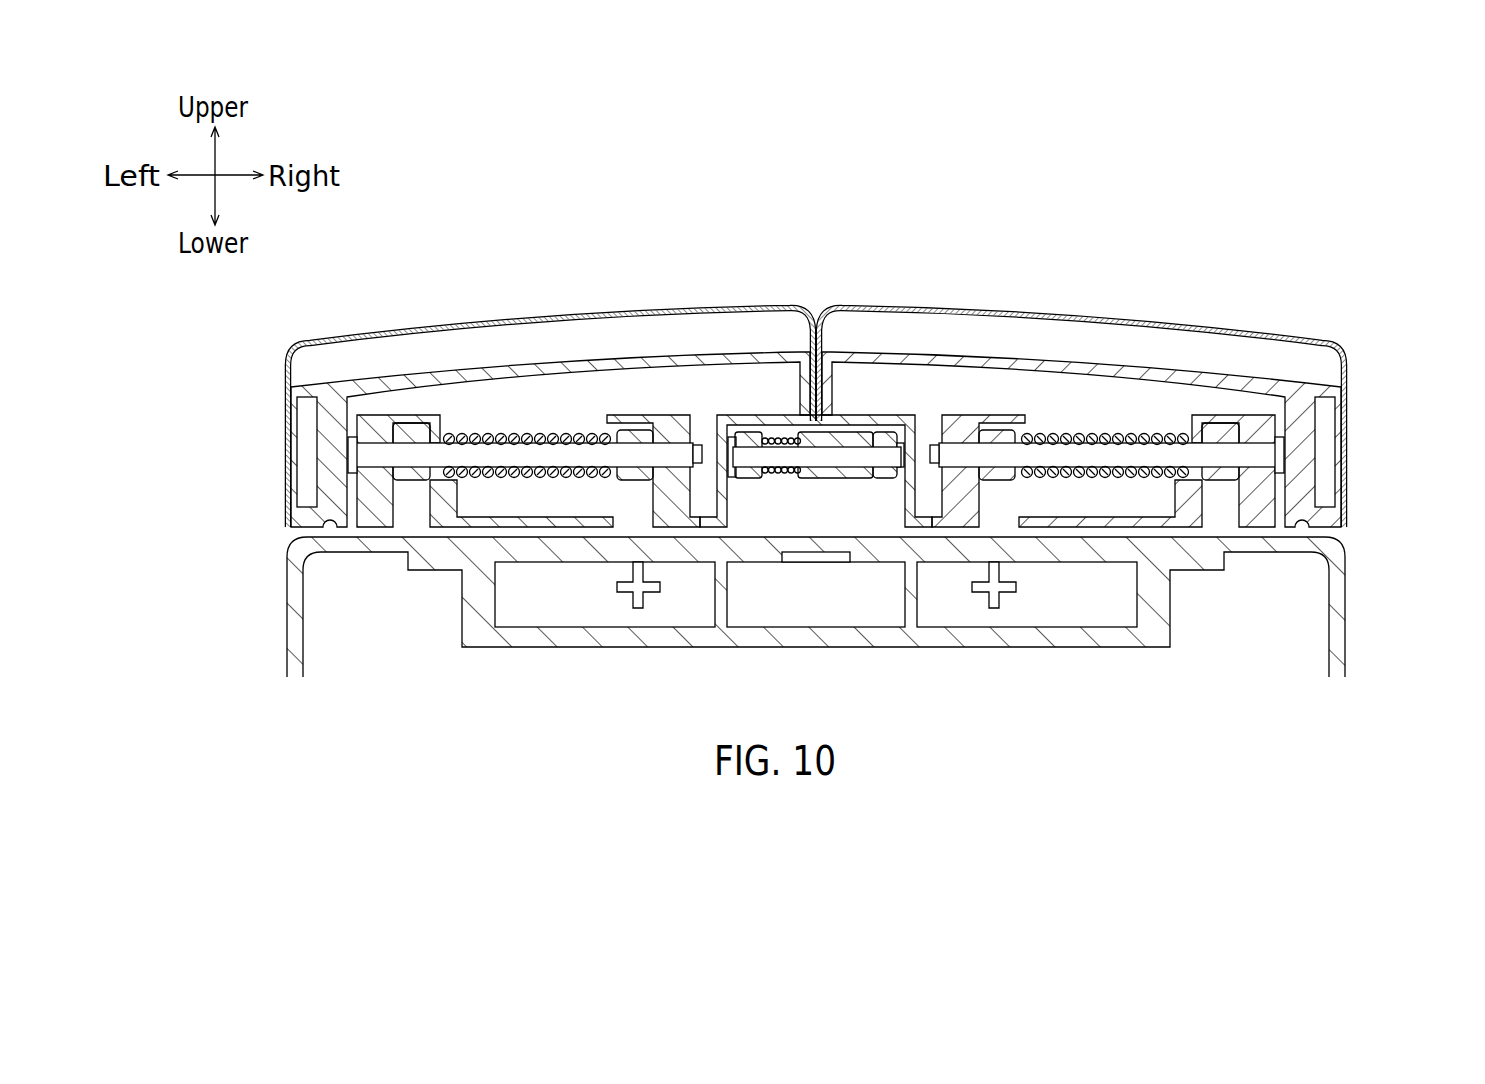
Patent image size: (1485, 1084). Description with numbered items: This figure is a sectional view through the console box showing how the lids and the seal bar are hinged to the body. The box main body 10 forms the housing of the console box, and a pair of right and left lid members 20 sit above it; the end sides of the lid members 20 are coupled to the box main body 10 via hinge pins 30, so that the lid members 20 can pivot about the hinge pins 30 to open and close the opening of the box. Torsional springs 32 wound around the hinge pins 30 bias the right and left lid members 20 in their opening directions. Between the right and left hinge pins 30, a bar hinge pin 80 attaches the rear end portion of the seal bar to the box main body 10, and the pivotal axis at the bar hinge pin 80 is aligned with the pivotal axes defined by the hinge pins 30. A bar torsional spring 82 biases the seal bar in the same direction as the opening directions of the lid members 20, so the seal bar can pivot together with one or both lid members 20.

The box main body 10 is at (1350, 628).
The lid members 20 is at (289, 333).
The hinge pins 30 is at (467, 453).
The torsional springs 32 is at (532, 433).
The bar hinge pin 80 is at (848, 453).
The bar torsional spring 82 is at (778, 440).